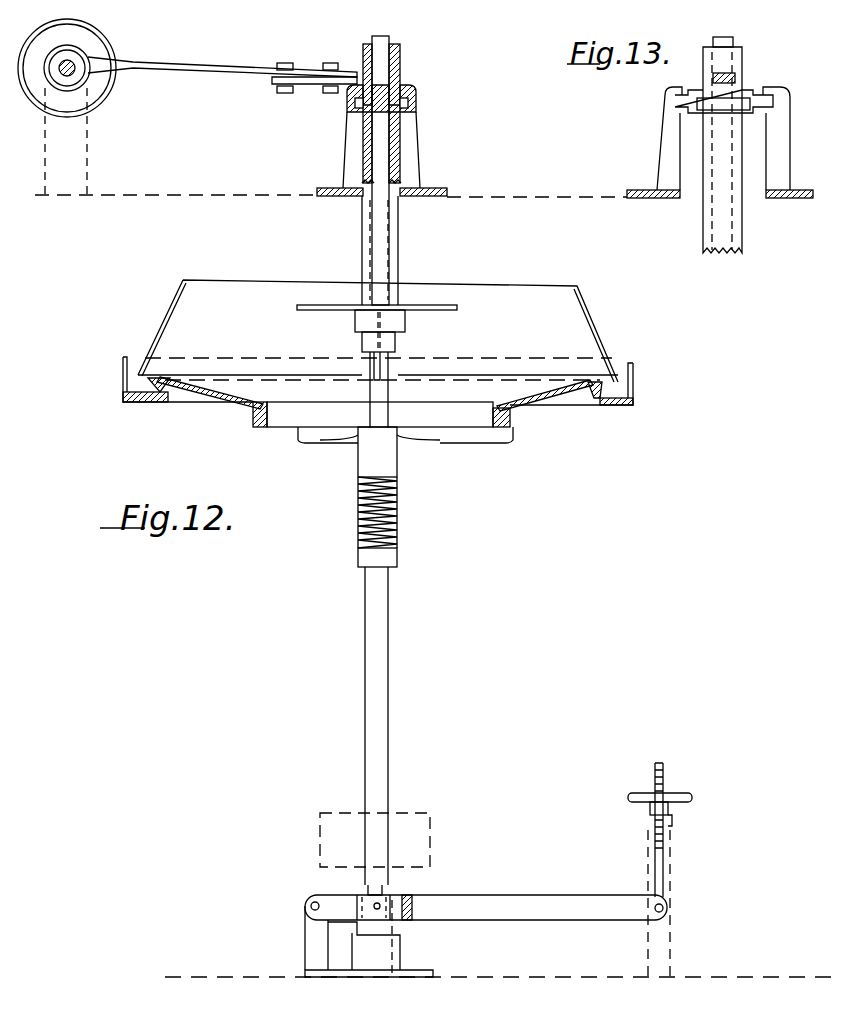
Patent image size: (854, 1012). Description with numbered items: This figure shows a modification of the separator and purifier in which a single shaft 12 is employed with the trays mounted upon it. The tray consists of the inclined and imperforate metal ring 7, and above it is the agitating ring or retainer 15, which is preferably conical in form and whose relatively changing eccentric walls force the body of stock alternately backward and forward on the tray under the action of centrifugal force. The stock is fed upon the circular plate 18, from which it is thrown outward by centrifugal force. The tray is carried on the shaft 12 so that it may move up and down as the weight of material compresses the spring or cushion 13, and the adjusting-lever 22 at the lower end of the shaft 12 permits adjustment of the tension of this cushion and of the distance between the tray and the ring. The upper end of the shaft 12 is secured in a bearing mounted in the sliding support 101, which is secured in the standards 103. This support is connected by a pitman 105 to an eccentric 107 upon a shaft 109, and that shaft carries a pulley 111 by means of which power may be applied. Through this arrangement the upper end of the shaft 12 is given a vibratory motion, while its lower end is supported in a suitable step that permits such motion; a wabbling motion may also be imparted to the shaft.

In FIG. 12, the inclined and imperforate metal ring 7 is at (550, 398).
In FIG. 12, the shaft 12 is at (380, 631).
In FIG. 12, the spring or cushion 13 is at (407, 510).
In FIG. 12, the agitating ring or retainer 15 is at (603, 310).
In FIG. 12, the circular plate 18 is at (467, 300).
In FIG. 12, the adjusting-lever 22 is at (488, 903).
In FIG. 12, the sliding support 101 is at (416, 95).
In FIG. 13, the sliding support 101 is at (675, 100).
In FIG. 13, the standards 103 is at (663, 145).
In FIG. 12, the pitman 105 is at (233, 75).
In FIG. 12, the eccentric 107 is at (87, 80).
In FIG. 12, the shaft 109 is at (48, 95).
In FIG. 12, the pulley 111 is at (82, 115).